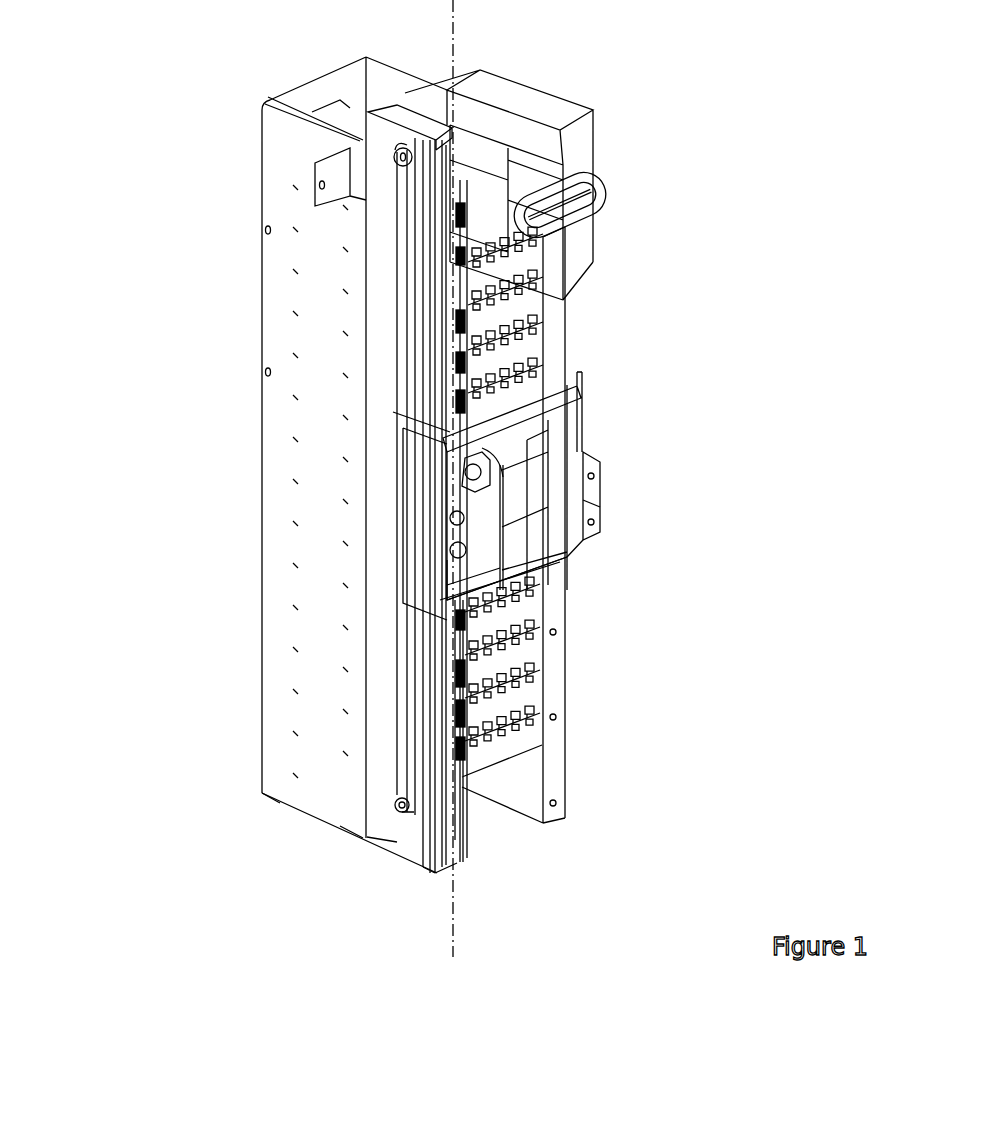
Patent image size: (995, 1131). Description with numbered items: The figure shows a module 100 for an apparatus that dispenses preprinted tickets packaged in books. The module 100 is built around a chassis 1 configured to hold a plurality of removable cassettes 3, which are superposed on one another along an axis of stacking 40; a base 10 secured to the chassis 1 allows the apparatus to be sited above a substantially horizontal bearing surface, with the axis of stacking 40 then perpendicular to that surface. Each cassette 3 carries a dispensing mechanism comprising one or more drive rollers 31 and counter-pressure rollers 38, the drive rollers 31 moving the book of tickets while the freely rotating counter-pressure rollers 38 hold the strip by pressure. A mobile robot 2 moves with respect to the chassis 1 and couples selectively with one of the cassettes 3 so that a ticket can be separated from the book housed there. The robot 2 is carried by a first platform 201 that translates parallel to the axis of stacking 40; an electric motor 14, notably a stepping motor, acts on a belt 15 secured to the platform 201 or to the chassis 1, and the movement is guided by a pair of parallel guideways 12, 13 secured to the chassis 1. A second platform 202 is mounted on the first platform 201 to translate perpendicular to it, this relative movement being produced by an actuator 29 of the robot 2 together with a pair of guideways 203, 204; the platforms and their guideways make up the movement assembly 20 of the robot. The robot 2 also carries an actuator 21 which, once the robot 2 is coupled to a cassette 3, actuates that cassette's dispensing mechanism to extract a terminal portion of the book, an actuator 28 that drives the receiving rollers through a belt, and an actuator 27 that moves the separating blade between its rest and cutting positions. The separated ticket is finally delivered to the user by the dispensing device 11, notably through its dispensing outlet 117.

The module 100 is at (158, 85).
The axis of stacking 40 is at (455, 45).
The chassis 1 is at (300, 373).
The base 10 is at (268, 797).
The electric motor 14 is at (398, 137).
The belt 15 is at (397, 195).
The dispensing device 11 is at (598, 168).
The dispensing outlet 117 is at (530, 205).
The counter-pressure rollers 38 is at (522, 272).
The drive rollers 31 is at (525, 290).
The actuator 21 is at (478, 500).
The actuator 29 is at (480, 545).
The actuator 28 is at (585, 480).
The actuator 27 is at (587, 517).
The mobile robot 2 is at (577, 553).
The guideway 12 is at (555, 610).
The guideway 13 is at (450, 637).
The removable cassettes 3 is at (530, 688).
The carriage assembly 20 is at (98, 520).
The first platform 201 is at (415, 553).
The second platform 202 is at (450, 580).
The guideway 203 is at (565, 405).
The guideway 204 is at (450, 598).